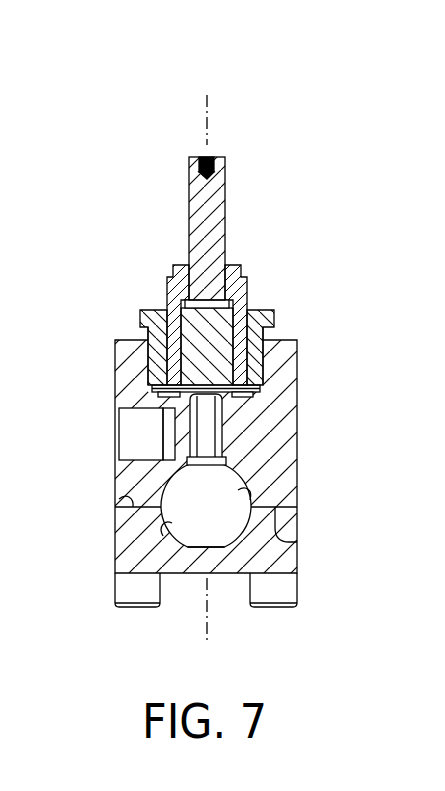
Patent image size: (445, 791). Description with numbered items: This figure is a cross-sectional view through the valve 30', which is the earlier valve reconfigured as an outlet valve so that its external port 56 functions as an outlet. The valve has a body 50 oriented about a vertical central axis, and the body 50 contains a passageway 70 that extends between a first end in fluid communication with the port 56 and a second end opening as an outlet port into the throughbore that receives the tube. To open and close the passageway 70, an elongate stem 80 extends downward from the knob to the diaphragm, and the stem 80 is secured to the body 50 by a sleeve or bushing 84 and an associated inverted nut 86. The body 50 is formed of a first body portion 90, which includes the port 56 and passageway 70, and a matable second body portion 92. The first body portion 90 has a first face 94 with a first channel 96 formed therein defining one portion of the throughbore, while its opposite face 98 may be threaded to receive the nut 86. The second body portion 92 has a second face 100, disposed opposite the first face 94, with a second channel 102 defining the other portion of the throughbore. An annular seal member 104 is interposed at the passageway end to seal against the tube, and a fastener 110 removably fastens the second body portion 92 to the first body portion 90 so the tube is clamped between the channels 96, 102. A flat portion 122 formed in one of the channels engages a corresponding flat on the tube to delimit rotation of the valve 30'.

The valve 30' is at (271, 345).
The body 50 is at (220, 478).
The external inlet port 56 is at (100, 436).
The passageway 70 is at (222, 436).
The elongate stem 80 is at (226, 202).
The sleeve or bushing 84 is at (247, 287).
The inverted nut 86 is at (278, 312).
The first body portion 90 is at (298, 452).
The second body portion 92 is at (300, 556).
The first face 94 is at (297, 541).
The first channel 96 is at (245, 495).
The opposite face 98 is at (300, 353).
The second face 100 is at (119, 499).
The second channel 102 is at (172, 525).
The annular seal member 104 is at (226, 459).
The fastener 110 is at (282, 612).
The flat portion 122 is at (219, 548).